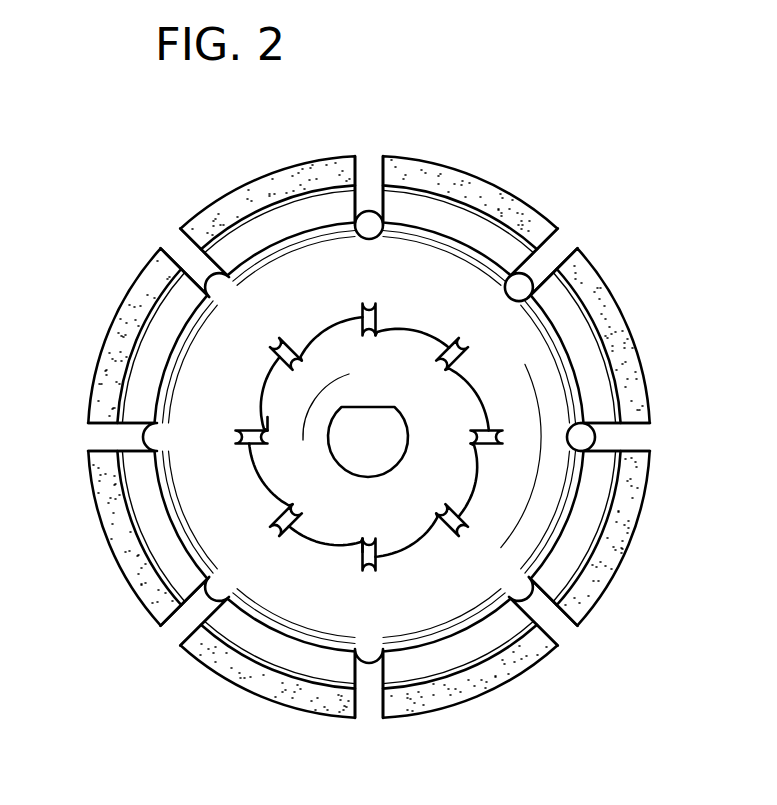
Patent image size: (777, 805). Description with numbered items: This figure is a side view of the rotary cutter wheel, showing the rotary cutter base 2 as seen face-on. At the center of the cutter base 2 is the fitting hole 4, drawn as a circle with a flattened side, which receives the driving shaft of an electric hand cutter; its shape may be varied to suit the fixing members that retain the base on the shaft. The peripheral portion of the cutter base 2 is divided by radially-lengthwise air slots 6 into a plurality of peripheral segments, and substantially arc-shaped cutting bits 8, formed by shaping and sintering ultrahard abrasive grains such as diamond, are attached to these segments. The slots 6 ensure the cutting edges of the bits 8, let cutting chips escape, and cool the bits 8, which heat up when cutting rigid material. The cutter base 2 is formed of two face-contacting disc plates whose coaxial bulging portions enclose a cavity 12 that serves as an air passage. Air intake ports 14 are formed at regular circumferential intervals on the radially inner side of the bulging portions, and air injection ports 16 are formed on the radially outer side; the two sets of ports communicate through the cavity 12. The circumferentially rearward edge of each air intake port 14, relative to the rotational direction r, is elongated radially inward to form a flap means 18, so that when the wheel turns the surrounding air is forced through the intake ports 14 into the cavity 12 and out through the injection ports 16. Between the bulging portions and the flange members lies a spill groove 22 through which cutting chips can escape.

The rotary cutter base 2 is at (265, 492).
The fitting hole 4 is at (372, 470).
The air slots 6 is at (363, 208).
The cutting bits 8 is at (254, 190).
The cavity 12 is at (200, 378).
The air intake ports 14 is at (373, 333).
The air injection ports 16 is at (372, 238).
The flap means 18 is at (270, 428).
The spill groove 22 is at (586, 345).